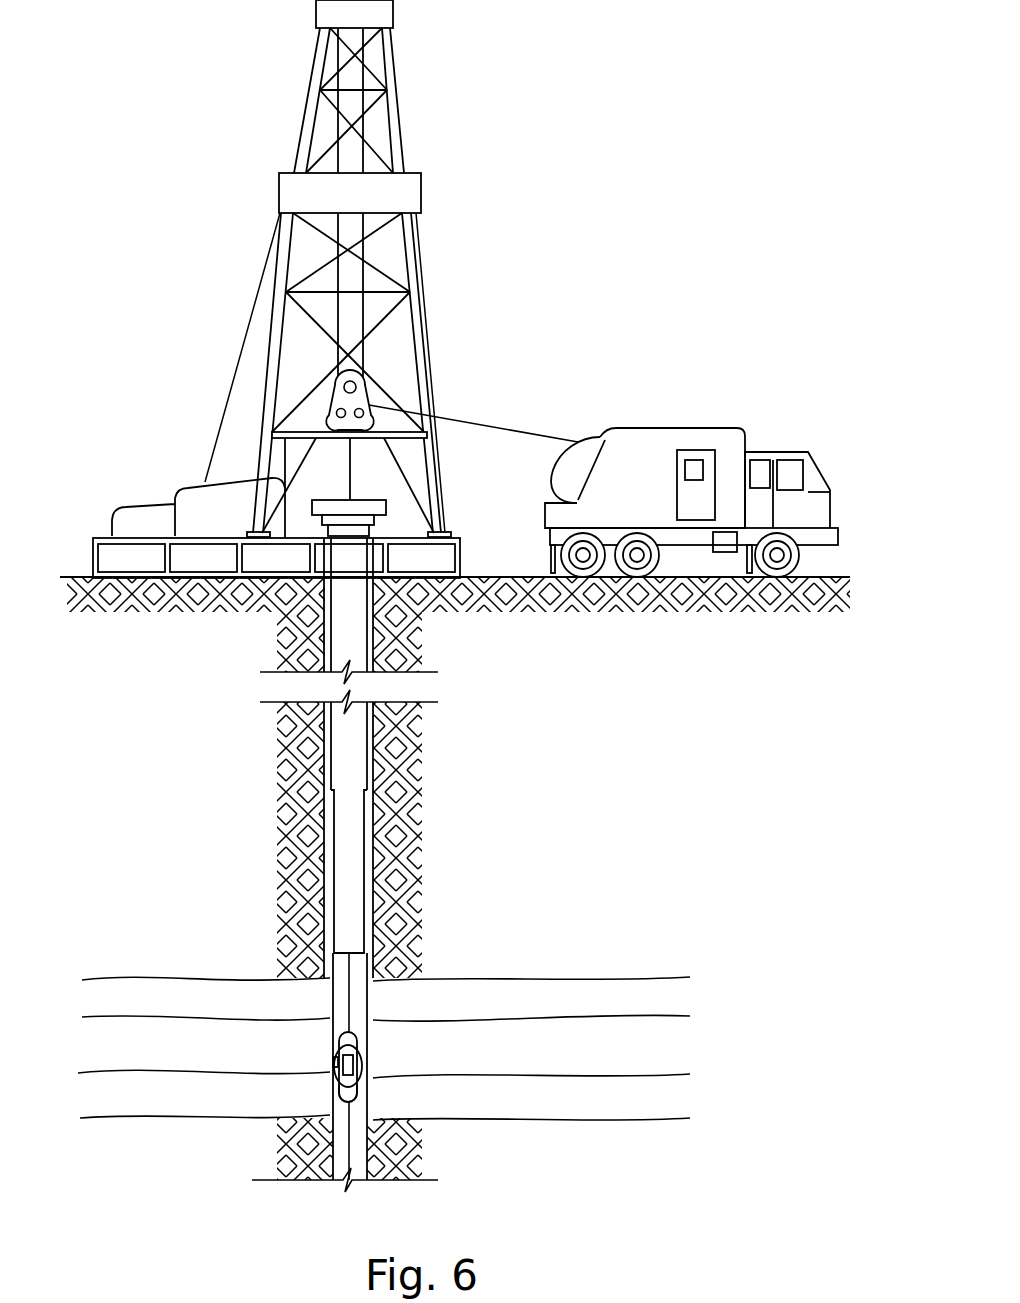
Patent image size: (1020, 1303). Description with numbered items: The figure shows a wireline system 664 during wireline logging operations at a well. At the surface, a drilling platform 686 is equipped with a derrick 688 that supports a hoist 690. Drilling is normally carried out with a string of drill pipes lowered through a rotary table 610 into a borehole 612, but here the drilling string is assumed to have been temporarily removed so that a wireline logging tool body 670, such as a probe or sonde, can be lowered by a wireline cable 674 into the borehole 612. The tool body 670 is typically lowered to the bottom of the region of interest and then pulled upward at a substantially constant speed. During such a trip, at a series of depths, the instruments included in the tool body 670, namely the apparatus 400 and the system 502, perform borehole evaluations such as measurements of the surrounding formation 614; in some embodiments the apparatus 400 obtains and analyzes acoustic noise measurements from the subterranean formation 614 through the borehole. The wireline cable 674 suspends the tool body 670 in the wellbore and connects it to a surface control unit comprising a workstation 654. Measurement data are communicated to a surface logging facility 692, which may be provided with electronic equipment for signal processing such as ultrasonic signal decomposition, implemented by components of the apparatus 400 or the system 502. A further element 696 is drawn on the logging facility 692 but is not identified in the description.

The wireline system 664 is at (603, 116).
The hoist 690 is at (363, 380).
The wireline cable 674 is at (477, 418).
The surface logging facility 692 is at (691, 468).
The control unit 696 is at (694, 460).
The workstation 654 is at (676, 498).
The rotary table 610 is at (388, 503).
The derrick 688 is at (447, 525).
The drilling platform 686 is at (461, 568).
The borehole 612 is at (331, 990).
The system 502 is at (359, 1033).
The apparatus 400 is at (363, 1052).
The wireline logging tool body 670 is at (359, 1090).
The formation 614 is at (700, 975).